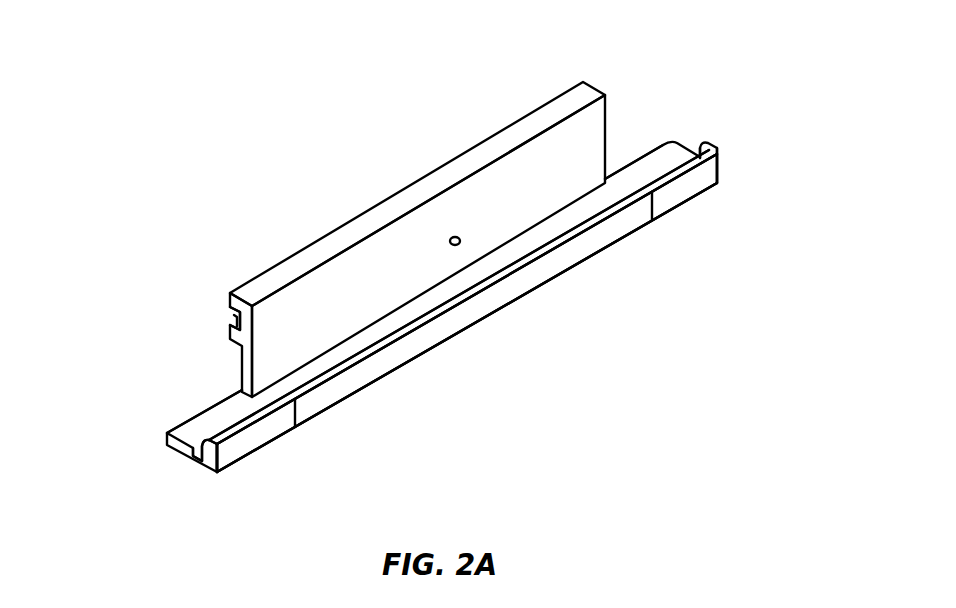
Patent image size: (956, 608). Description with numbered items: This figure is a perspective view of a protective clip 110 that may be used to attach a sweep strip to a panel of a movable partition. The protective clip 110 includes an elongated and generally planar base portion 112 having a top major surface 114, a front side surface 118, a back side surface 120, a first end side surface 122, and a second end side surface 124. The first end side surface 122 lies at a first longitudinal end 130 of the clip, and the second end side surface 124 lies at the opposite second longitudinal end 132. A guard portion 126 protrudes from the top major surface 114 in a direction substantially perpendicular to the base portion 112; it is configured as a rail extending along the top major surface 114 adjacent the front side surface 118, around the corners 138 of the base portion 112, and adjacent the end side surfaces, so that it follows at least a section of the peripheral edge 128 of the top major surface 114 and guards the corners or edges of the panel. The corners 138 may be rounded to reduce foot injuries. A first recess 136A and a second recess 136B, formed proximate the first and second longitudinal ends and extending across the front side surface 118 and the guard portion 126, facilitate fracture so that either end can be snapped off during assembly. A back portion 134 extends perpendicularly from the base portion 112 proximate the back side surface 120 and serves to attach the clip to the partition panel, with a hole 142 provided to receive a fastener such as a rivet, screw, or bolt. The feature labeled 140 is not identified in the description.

The protective clip 110 is at (268, 117).
The base portion 112 is at (642, 152).
The top major surface 114 is at (213, 413).
The front side surface 118 is at (458, 310).
The back side surface 120 is at (228, 395).
The first end side surface 122 is at (183, 466).
The second end side surface 124 is at (712, 143).
The guard portion 126 is at (383, 347).
The peripheral edge 128 is at (553, 267).
The first longitudinal end 130 is at (178, 458).
The second longitudinal end 132 is at (722, 167).
The back portion 134 is at (315, 297).
The first recess 136A is at (296, 432).
The second recess 136B is at (652, 213).
The corners 138 is at (720, 180).
The hook slot 140 is at (238, 313).
The hole 142 is at (452, 236).